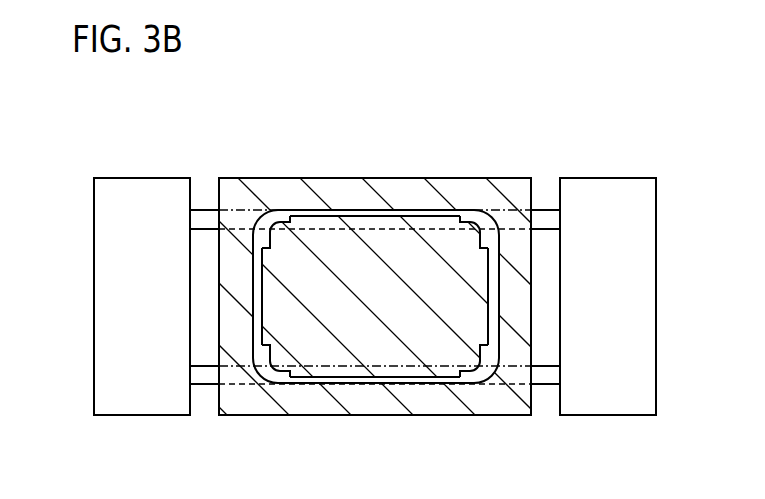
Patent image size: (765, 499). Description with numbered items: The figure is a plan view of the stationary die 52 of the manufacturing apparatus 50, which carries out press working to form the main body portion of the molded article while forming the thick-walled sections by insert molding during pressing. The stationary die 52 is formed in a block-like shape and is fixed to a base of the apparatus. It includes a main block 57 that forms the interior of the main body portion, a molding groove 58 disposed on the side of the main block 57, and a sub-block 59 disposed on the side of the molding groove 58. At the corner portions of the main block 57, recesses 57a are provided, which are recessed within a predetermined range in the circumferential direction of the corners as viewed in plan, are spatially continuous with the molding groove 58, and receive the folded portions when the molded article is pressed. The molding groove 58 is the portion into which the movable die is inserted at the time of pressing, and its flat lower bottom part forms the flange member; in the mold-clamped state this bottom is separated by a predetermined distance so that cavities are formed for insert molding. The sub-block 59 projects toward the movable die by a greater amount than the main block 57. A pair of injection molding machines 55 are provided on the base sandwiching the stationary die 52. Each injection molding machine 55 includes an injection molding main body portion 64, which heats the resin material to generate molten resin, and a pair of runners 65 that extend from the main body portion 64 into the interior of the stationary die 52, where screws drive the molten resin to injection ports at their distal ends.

The manufacturing apparatus 50 is at (263, 106).
The stationary die 52 is at (395, 176).
The injection molding machine 55 is at (375, 267).
The main block 57 is at (316, 219).
The recess 57a is at (280, 222).
The molding groove 58 is at (258, 305).
The sub-block 59 is at (352, 208).
The injection molding main body portion 64 is at (108, 277).
The runner 65 is at (203, 219).